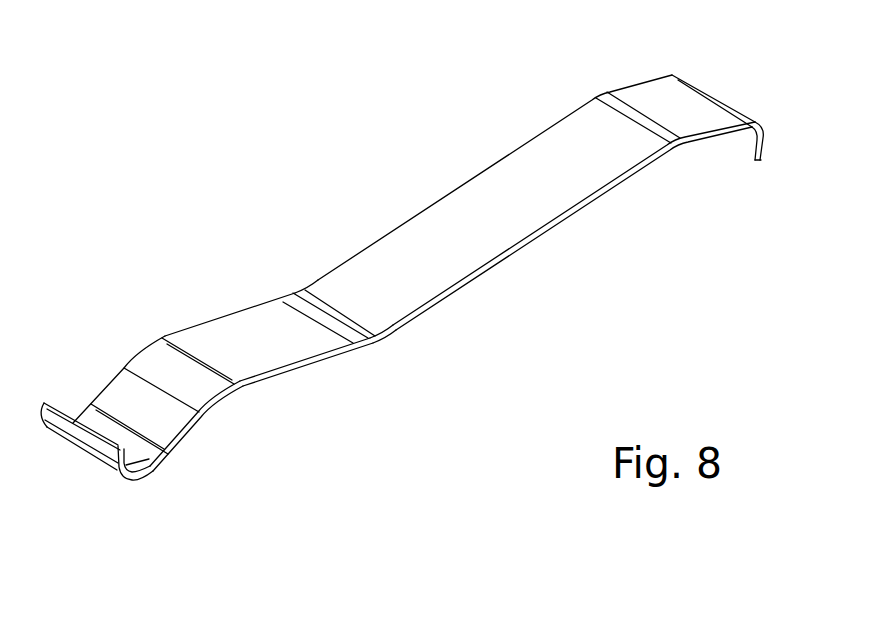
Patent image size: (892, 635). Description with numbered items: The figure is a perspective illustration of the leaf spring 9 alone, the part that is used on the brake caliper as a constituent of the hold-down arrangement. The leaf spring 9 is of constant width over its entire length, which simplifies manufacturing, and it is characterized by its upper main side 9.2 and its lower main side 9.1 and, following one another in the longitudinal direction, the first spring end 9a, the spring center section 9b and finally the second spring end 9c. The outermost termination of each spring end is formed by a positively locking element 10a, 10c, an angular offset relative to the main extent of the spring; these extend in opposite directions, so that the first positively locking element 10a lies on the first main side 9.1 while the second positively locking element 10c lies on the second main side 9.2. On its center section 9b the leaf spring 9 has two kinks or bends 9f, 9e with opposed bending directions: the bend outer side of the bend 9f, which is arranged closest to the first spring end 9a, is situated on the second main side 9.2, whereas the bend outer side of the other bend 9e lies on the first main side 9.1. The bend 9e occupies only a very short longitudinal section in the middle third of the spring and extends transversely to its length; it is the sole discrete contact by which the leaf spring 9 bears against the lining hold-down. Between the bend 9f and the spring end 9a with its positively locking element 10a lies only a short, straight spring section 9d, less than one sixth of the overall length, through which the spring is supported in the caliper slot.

The leaf spring 9 is at (317, 149).
The first spring end 9a is at (726, 67).
The spring center section 9b is at (425, 252).
The second spring end 9c is at (85, 473).
The spring section 9d is at (654, 98).
The bend 9e is at (370, 340).
The bend 9f is at (679, 141).
The lower main side 9.1 is at (490, 270).
The upper main side 9.2 is at (466, 220).
The positively locking element 10a is at (762, 150).
The positively locking element 10c is at (127, 462).